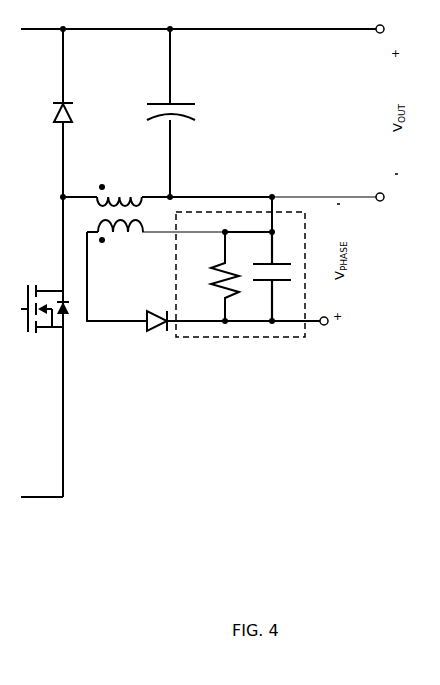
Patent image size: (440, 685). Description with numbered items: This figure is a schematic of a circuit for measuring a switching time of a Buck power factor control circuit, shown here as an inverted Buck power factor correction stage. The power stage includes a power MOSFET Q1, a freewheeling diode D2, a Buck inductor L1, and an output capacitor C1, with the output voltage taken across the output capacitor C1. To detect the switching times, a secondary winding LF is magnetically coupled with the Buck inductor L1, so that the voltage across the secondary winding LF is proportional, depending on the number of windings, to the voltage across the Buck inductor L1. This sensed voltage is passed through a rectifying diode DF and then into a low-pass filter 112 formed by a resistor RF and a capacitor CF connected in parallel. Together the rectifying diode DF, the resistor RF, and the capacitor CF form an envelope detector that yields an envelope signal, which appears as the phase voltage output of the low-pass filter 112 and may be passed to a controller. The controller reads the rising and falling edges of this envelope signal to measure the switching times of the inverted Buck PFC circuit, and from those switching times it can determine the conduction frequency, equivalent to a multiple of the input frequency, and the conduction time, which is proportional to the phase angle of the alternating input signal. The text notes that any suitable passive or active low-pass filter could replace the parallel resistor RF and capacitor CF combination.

The low-pass filter 112 is at (242, 301).
The freewheeling diode D2 is at (72, 110).
The output capacitor C1 is at (171, 101).
The Buck inductor L1 is at (119, 194).
The secondary winding LF is at (120, 240).
The rectifying diode DF is at (157, 333).
The power MOSFET Q1 is at (45, 301).
The resistor RF is at (220, 276).
The capacitor CF is at (276, 276).